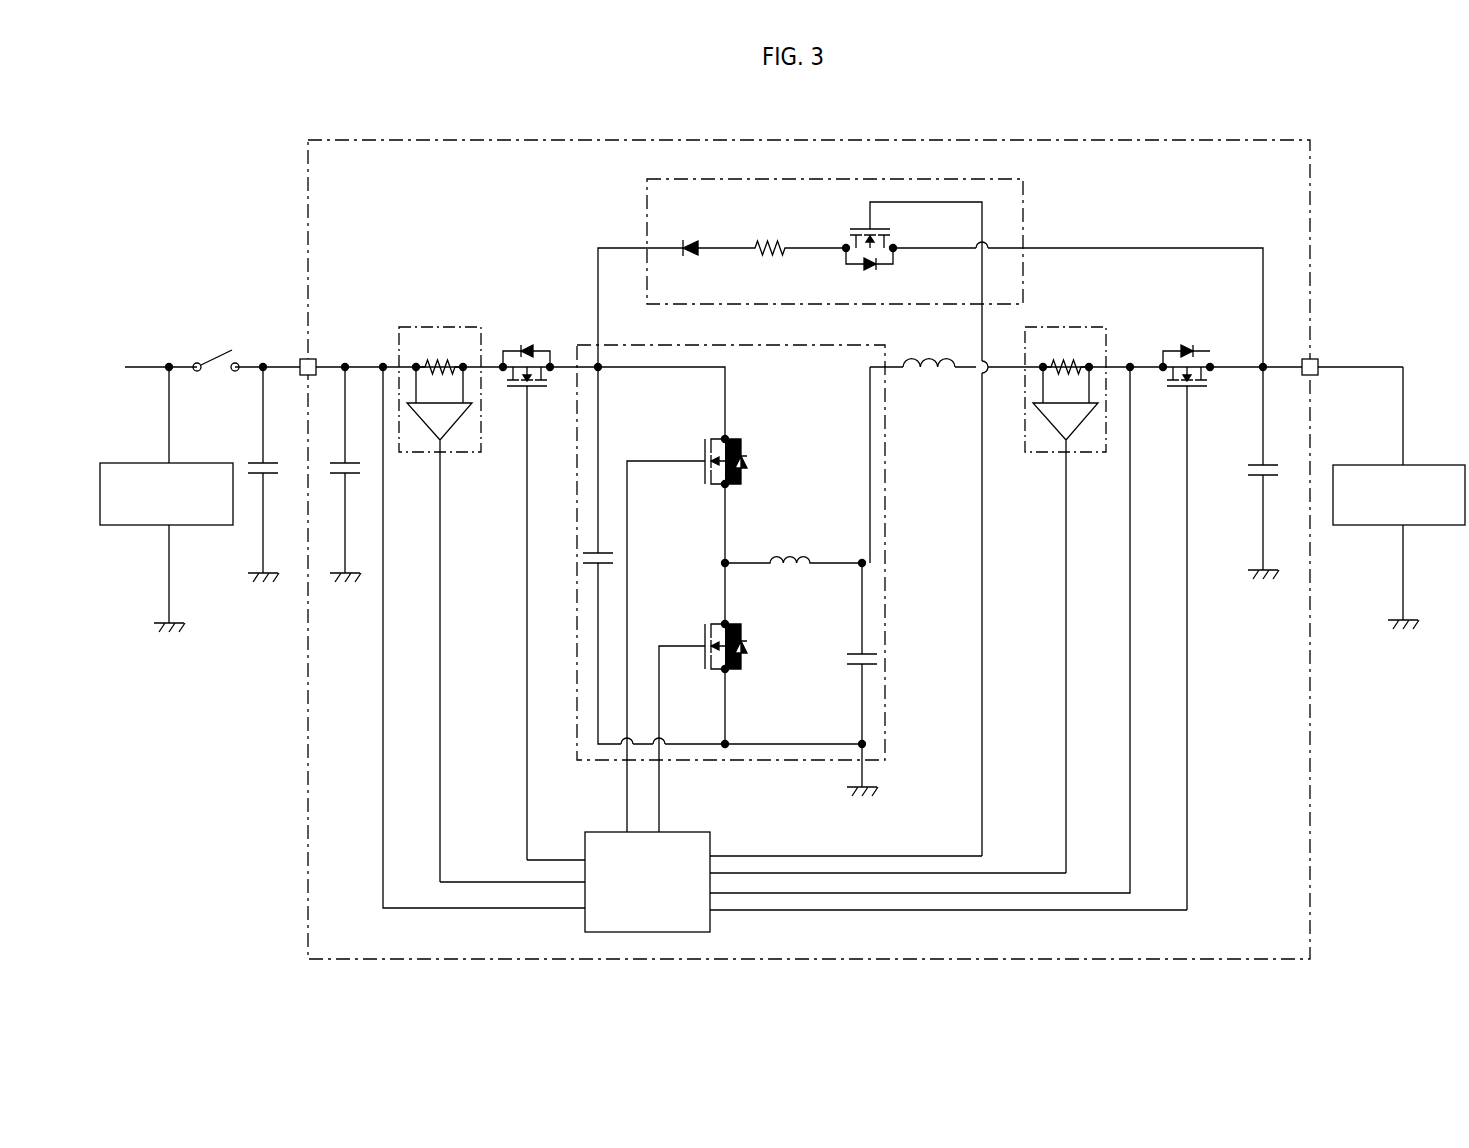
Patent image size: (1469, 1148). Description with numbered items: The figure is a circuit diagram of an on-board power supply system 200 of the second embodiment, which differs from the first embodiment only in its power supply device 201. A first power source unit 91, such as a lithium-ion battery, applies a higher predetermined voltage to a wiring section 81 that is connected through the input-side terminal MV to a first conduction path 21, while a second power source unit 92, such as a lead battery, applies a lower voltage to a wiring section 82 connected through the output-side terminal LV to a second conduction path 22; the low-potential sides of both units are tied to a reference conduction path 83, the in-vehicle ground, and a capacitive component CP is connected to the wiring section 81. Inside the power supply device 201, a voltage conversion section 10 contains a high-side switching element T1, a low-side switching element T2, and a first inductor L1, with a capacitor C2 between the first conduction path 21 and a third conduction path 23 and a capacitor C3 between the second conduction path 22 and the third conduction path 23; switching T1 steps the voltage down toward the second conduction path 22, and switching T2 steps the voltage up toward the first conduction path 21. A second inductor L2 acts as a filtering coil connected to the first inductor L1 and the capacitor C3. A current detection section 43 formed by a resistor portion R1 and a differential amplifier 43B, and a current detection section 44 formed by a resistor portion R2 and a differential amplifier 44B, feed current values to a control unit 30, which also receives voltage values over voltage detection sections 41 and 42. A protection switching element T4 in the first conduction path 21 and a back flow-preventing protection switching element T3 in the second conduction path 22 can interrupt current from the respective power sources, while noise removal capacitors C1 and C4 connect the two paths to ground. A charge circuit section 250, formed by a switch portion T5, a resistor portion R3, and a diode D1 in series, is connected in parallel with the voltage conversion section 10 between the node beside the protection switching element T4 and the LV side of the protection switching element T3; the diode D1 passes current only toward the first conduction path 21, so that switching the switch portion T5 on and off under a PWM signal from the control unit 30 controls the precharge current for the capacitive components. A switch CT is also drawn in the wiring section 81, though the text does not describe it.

The voltage conversion section 10 is at (761, 588).
The first conduction path 21 is at (380, 360).
The second conduction path 22 is at (906, 375).
The third conduction path 23 is at (348, 568).
The control unit 30 is at (690, 832).
The voltage detection section 41 is at (383, 725).
The voltage detection section 42 is at (1130, 713).
The current detection section 43 is at (448, 604).
The differential amplifier 43B is at (438, 442).
The current detection section 44 is at (1059, 561).
The differential amplifier 44B is at (1060, 445).
The wiring section 81 is at (167, 362).
The wiring section 82 is at (1384, 365).
The reference conduction path 83 is at (171, 622).
The first power source unit 91 is at (134, 530).
The second power source unit 92 is at (1375, 528).
The on-board power supply system 200 is at (1378, 210).
The power supply device 201 is at (1258, 140).
The charge circuit section 250 is at (930, 512).
The capacitor C1 is at (344, 466).
The capacitor C2 is at (592, 556).
The capacitor C3 is at (870, 658).
The capacitor C4 is at (1270, 466).
The capacitive component CP is at (262, 466).
The switch CT is at (217, 355).
The diode D1 is at (693, 240).
The first inductor L1 is at (793, 545).
The second inductor L2 is at (929, 348).
The output-side terminal LV is at (1318, 362).
The input-side terminal MV is at (303, 359).
The resistor portion R1 is at (440, 352).
The resistor portion R2 is at (1066, 352).
The resistor portion R3 is at (774, 229).
The high-side driving switching element T1 is at (720, 438).
The low-side driving switching element T2 is at (720, 624).
The protection switching element T3 is at (1196, 392).
The protection switching element T4 is at (533, 392).
The switch portion T5 is at (896, 256).